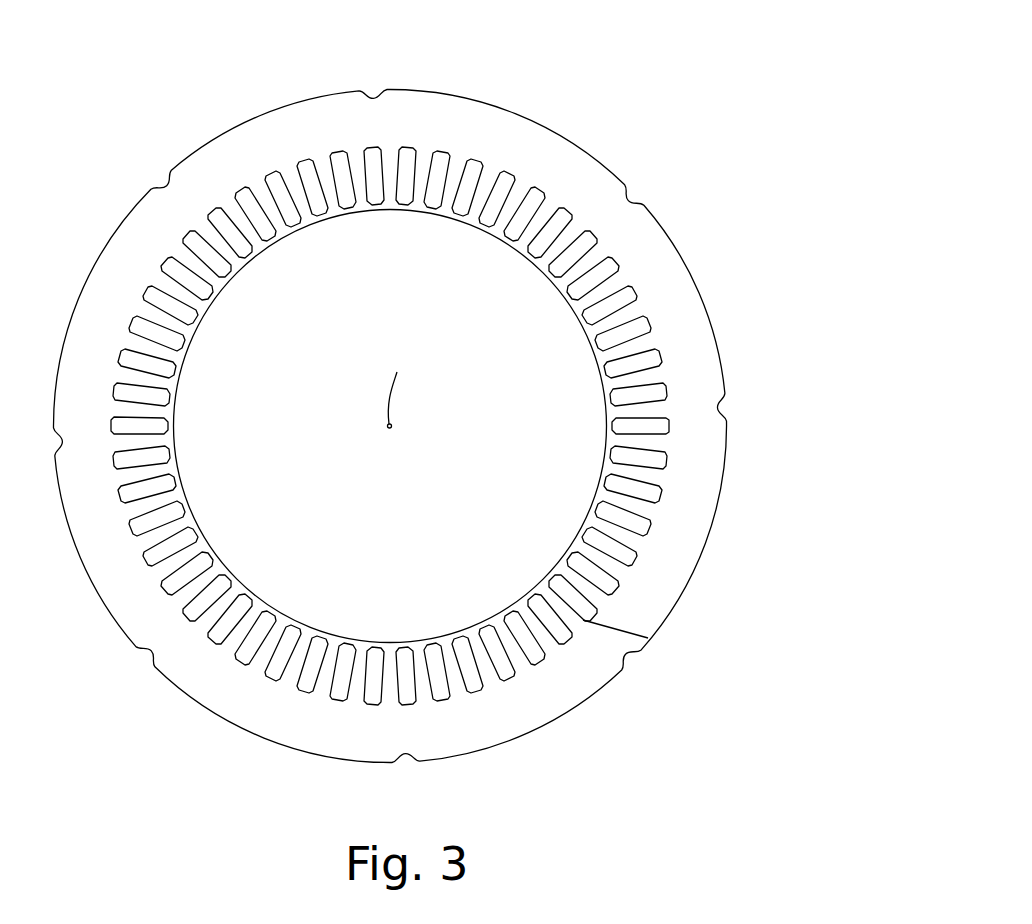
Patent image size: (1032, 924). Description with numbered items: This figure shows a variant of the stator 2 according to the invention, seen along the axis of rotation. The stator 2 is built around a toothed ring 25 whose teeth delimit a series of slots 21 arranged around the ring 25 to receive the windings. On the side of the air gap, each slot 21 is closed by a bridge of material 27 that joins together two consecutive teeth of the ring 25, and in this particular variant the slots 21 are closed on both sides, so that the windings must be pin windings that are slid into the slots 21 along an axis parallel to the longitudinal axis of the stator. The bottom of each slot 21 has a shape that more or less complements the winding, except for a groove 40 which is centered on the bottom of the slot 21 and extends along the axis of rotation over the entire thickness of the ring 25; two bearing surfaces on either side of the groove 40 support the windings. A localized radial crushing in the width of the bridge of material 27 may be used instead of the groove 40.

The stator 2 is at (611, 116).
The toothed ring 25 is at (637, 255).
The slots 21 is at (627, 293).
The bridge of material 27 is at (585, 330).
The groove 40 is at (572, 299).